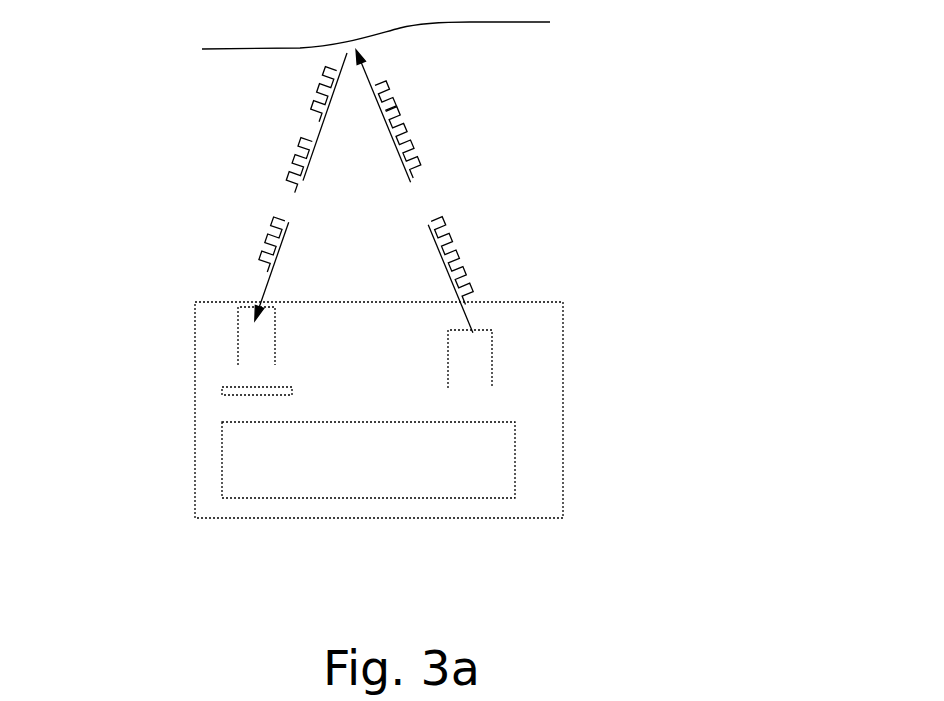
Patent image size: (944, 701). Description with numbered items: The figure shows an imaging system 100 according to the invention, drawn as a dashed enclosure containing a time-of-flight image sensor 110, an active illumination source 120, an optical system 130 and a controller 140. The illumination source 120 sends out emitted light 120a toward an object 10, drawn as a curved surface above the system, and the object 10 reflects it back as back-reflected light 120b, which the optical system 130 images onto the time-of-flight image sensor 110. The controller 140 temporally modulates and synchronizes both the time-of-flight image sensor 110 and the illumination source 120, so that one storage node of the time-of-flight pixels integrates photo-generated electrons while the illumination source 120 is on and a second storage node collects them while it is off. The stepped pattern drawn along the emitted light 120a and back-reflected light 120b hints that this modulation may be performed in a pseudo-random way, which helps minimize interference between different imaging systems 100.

The object 10 is at (401, 41).
The imaging system 100 is at (579, 410).
The time-of-flight image sensor 110 is at (209, 390).
The illumination source 120 is at (507, 355).
The emitted light 120a is at (415, 191).
The back-reflected light 120b is at (301, 187).
The optical system 130 is at (224, 335).
The controller 140 is at (367, 512).